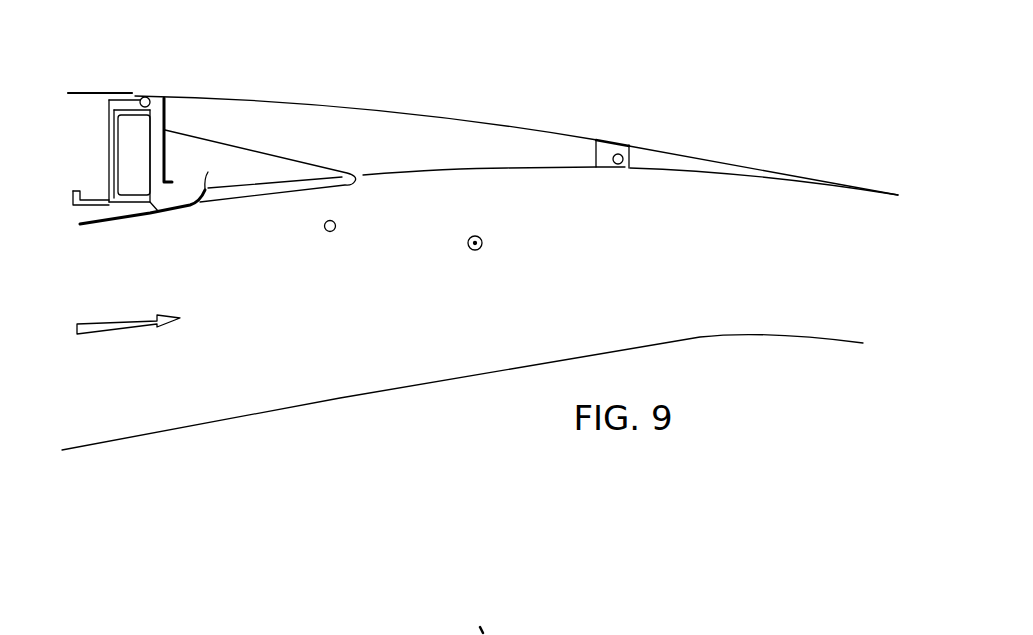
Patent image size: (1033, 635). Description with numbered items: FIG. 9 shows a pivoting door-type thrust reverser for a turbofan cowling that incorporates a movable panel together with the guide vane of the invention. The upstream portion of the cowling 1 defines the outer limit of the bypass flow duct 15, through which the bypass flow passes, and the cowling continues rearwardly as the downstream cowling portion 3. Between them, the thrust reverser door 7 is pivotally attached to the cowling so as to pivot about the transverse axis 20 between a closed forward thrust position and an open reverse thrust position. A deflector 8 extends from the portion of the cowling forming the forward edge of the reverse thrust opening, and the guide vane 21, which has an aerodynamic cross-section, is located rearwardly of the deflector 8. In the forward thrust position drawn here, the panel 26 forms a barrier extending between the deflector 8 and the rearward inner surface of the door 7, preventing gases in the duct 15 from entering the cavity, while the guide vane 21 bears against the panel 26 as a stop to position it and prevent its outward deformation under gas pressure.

The upstream portion of the cowling 1 is at (92, 95).
The downstream cowling portion 3 is at (692, 165).
The thrust reverser door 7 is at (357, 132).
The deflector 8 is at (187, 207).
The bypass flow duct 15 is at (462, 344).
The transverse axis 20 is at (477, 250).
The guide vane 21 is at (236, 172).
The panel 26 is at (275, 192).